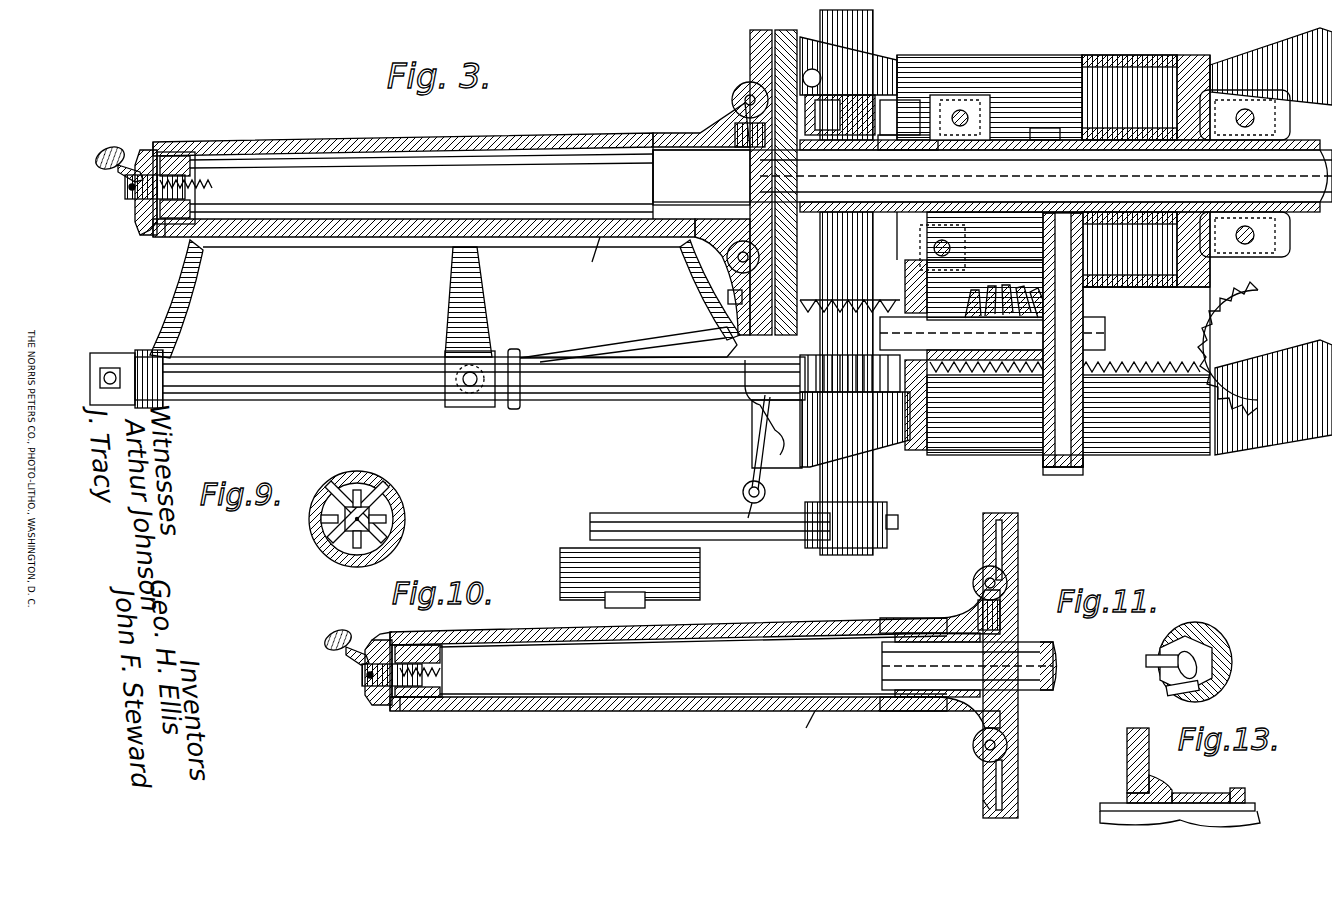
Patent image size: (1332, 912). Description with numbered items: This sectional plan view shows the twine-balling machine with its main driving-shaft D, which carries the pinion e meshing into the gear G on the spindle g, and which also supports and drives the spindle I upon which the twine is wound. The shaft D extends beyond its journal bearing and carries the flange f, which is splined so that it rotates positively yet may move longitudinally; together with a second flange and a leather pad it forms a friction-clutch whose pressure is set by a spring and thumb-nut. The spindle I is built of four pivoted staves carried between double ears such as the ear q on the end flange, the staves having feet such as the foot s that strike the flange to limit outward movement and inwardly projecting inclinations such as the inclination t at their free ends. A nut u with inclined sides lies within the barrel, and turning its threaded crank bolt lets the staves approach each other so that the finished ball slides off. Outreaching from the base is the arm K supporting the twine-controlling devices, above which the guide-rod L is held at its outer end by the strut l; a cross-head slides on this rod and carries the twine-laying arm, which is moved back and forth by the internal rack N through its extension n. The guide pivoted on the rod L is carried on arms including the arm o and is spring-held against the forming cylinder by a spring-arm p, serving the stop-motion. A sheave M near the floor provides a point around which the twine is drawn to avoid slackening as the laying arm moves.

In FIG. 3, the spindle I is at (403, 189).
In FIG. 10, the spindle I is at (668, 671).
In FIG. 3, the inwardly-projecting inclination t is at (178, 156).
In FIG. 9, the inwardly-projecting inclination t is at (350, 470).
In FIG. 10, the inwardly-projecting inclination t is at (410, 645).
In FIG. 3, the nut u is at (210, 182).
In FIG. 10, the nut u is at (430, 690).
In FIG. 11, the nut u is at (1218, 655).
In FIG. 3, the flange f is at (849, 282).
In FIG. 13, the flange f is at (1149, 760).
In FIG. 3, the double ear q is at (735, 130).
In FIG. 10, the double ear q is at (978, 610).
In FIG. 3, the bolt p is at (742, 263).
In FIG. 3, the foot s is at (750, 45).
In FIG. 10, the foot s is at (983, 536).
In FIG. 3, the main driving-shaft D is at (1030, 140).
In FIG. 10, the main driving-shaft D is at (882, 660).
In FIG. 13, the main driving-shaft D is at (1222, 803).
In FIG. 3, the pinion e is at (1045, 128).
In FIG. 3, the internal rack N is at (1252, 320).
In FIG. 3, the spindle g is at (850, 313).
In FIG. 3, the gear G is at (1083, 425).
In FIG. 3, the arm o is at (190, 290).
In FIG. 3, the strut l is at (125, 353).
In FIG. 3, the arm K is at (285, 400).
In FIG. 3, the guide-rod L is at (375, 385).
In FIG. 3, the extension n is at (632, 347).
In FIG. 3, the sheave M is at (700, 565).